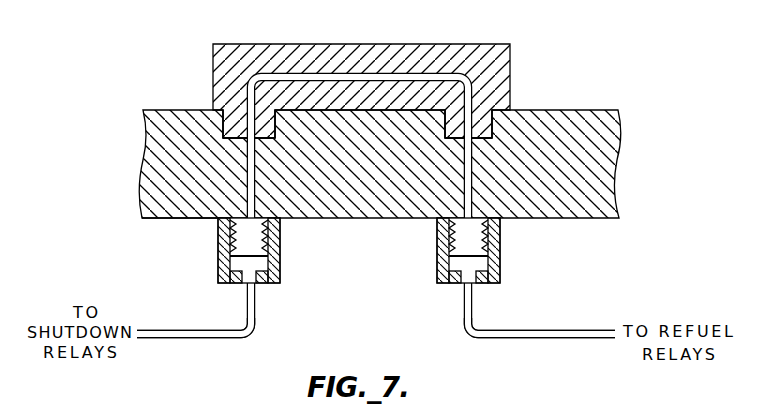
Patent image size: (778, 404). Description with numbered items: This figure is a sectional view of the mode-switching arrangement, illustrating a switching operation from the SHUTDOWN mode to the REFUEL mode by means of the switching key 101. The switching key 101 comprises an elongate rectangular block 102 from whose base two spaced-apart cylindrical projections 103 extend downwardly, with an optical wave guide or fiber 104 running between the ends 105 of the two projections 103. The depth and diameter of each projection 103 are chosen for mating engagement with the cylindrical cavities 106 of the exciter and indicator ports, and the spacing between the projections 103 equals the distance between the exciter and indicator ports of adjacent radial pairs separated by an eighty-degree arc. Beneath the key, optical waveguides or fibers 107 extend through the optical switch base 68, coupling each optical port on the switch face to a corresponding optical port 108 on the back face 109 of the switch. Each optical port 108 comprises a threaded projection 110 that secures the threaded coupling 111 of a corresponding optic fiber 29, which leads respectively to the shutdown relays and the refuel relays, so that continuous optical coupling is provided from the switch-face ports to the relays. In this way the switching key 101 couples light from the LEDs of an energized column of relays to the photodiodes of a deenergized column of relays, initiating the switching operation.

The optic fiber 29 is at (256, 323).
The optical switch base 68 is at (618, 197).
The switching key 101 is at (394, 76).
The elongate rectangular block 102 is at (445, 50).
The cylindrical projections 103 is at (244, 136).
The optical wave guide or fiber 104 is at (335, 73).
The ends of the projections 105 is at (256, 138).
The cylindrical cavities 106 is at (237, 120).
The optical waveguides or fibers 107 is at (353, 257).
The optical port 108 is at (230, 258).
The back face 109 is at (143, 218).
The threaded projection 110 is at (281, 253).
The threaded coupling 111 is at (281, 282).